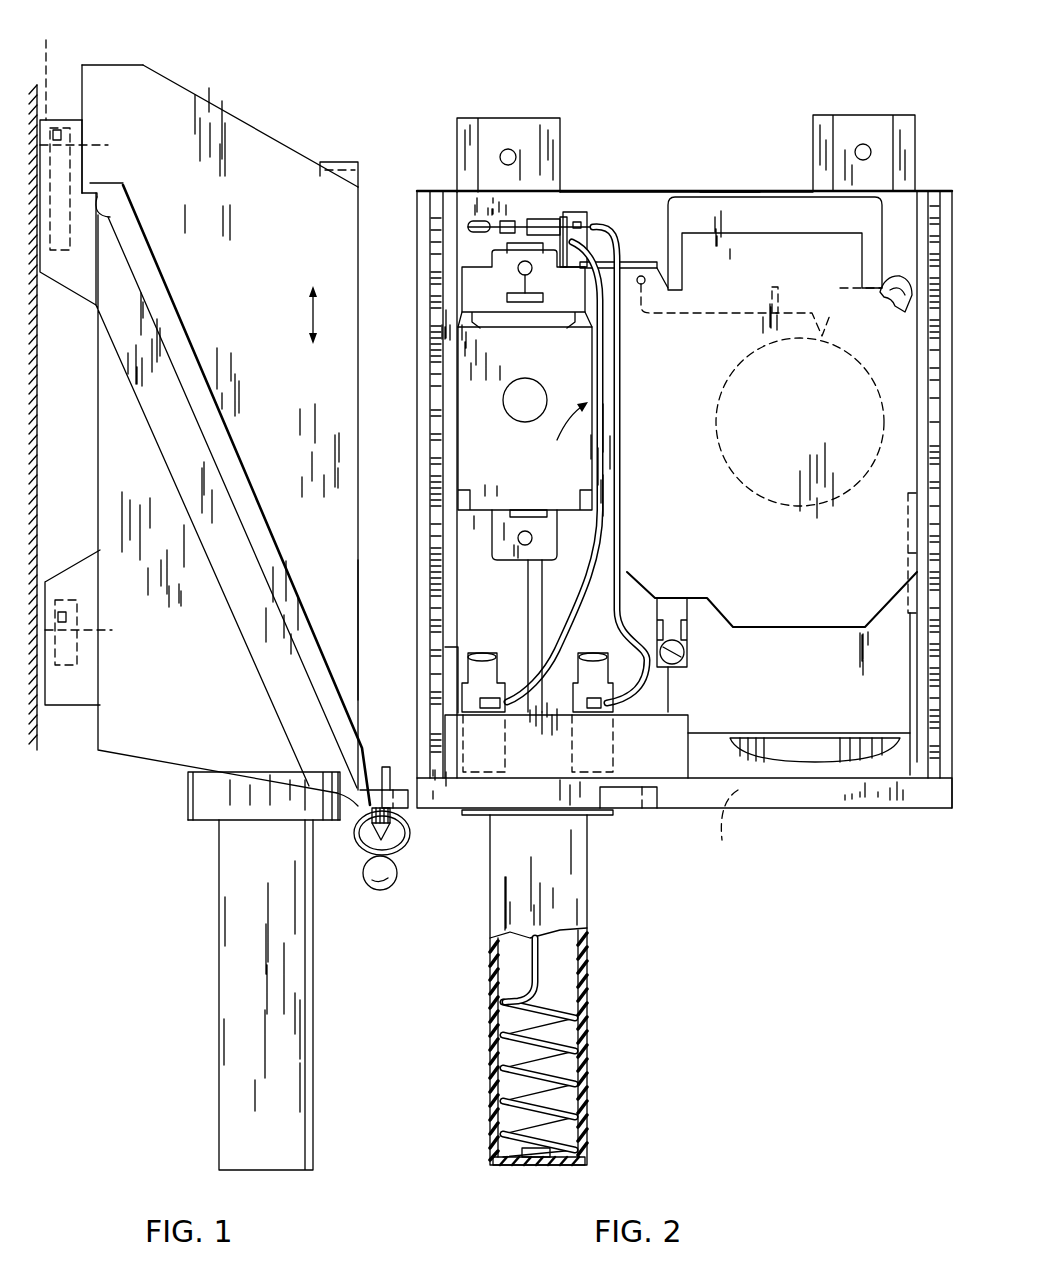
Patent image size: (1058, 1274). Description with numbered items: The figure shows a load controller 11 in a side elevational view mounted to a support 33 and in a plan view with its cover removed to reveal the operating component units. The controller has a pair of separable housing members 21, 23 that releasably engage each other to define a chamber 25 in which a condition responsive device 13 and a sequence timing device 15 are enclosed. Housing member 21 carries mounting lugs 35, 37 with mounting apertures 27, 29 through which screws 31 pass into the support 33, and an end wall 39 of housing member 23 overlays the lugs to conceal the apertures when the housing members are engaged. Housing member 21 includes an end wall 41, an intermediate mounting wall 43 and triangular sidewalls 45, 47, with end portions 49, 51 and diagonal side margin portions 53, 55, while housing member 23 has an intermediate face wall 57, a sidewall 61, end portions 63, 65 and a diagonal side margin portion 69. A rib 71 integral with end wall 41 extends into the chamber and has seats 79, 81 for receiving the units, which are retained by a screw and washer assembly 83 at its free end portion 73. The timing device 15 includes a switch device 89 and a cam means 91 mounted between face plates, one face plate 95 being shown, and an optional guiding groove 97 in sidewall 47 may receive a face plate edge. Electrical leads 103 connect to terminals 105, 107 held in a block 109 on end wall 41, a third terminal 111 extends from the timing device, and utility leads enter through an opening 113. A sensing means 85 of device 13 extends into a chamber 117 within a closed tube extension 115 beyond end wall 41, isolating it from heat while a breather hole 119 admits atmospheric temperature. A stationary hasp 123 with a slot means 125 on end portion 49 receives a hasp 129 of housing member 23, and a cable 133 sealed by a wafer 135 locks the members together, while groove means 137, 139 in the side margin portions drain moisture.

In FIG. 1, the load controller 11 is at (236, 84).
In FIG. 2, the load controller 11 is at (670, 160).
In FIG. 2, the condition responsive device 13 is at (512, 496).
In FIG. 2, the sequence timing device 15 is at (762, 550).
In FIG. 1, the housing member 21 is at (112, 760).
In FIG. 2, the housing member 21 is at (638, 816).
In FIG. 1, the housing member 23 is at (314, 160).
In FIG. 2, the chamber 25 is at (834, 706).
In FIG. 1, the mounting aperture 27 is at (45, 66).
In FIG. 2, the mounting aperture 27 is at (514, 150).
In FIG. 2, the mounting aperture 29 is at (865, 144).
In FIG. 1, the screws 31 is at (92, 146).
In FIG. 1, the support 33 is at (48, 718).
In FIG. 1, the mounting lug 35 is at (73, 118).
In FIG. 2, the mounting lug 35 is at (487, 118).
In FIG. 2, the mounting lug 37 is at (878, 118).
In FIG. 1, the end wall 39 is at (152, 78).
In FIG. 1, the end wall 41 is at (166, 768).
In FIG. 2, the end wall 41 is at (770, 795).
In FIG. 1, the intermediate wall 43 is at (94, 420).
In FIG. 2, the intermediate wall 43 is at (620, 190).
In FIG. 1, the sidewall 45 is at (190, 672).
In FIG. 2, the sidewall 45 is at (418, 420).
In FIG. 2, the sidewall 47 is at (953, 404).
In FIG. 1, the end portion 49 is at (352, 802).
In FIG. 2, the end portion 49 is at (848, 797).
In FIG. 1, the end portion 51 is at (112, 214).
In FIG. 2, the end portion 51 is at (722, 192).
In FIG. 1, the side margin portion 53 is at (212, 465).
In FIG. 2, the side margin portion 53 is at (422, 352).
In FIG. 2, the side margin portion 55 is at (946, 316).
In FIG. 1, the intermediate wall 57 is at (360, 548).
In FIG. 1, the sidewall 61 is at (258, 408).
In FIG. 1, the end portion 63 is at (104, 183).
In FIG. 1, the end portion 65 is at (368, 786).
In FIG. 1, the side margin portion 69 is at (212, 443).
In FIG. 2, the rib 71 is at (660, 686).
In FIG. 2, the free end portion 73 is at (588, 238).
In FIG. 2, the seat 79 is at (633, 588).
In FIG. 2, the seat 81 is at (628, 596).
In FIG. 2, the screw and washer assembly 83 is at (626, 262).
In FIG. 2, the sensing means 85 is at (580, 1050).
In FIG. 2, the switch device 89 is at (772, 226).
In FIG. 2, the cam means 91 is at (718, 400).
In FIG. 2, the face plate 95 is at (768, 630).
In FIG. 2, the guiding groove 97 is at (906, 520).
In FIG. 2, the electrical leads 103 is at (561, 435).
In FIG. 2, the terminal 105 is at (490, 698).
In FIG. 2, the terminal 107 is at (577, 708).
In FIG. 2, the block 109 is at (656, 758).
In FIG. 2, the third terminal 111 is at (658, 602).
In FIG. 2, the opening 113 is at (776, 740).
In FIG. 1, the extension 115 is at (303, 980).
In FIG. 2, the extension 115 is at (590, 978).
In FIG. 2, the chamber 117 is at (566, 997).
In FIG. 2, the breather hole 119 is at (513, 1168).
In FIG. 1, the stationary hasp 123 is at (408, 806).
In FIG. 2, the stationary hasp 123 is at (668, 812).
In FIG. 2, the slot means 125 is at (736, 823).
In FIG. 1, the hasp 129 is at (387, 770).
In FIG. 1, the cable 133 is at (356, 846).
In FIG. 1, the wafer 135 is at (392, 878).
In FIG. 2, the groove means 137 is at (434, 206).
In FIG. 2, the groove means 139 is at (935, 200).